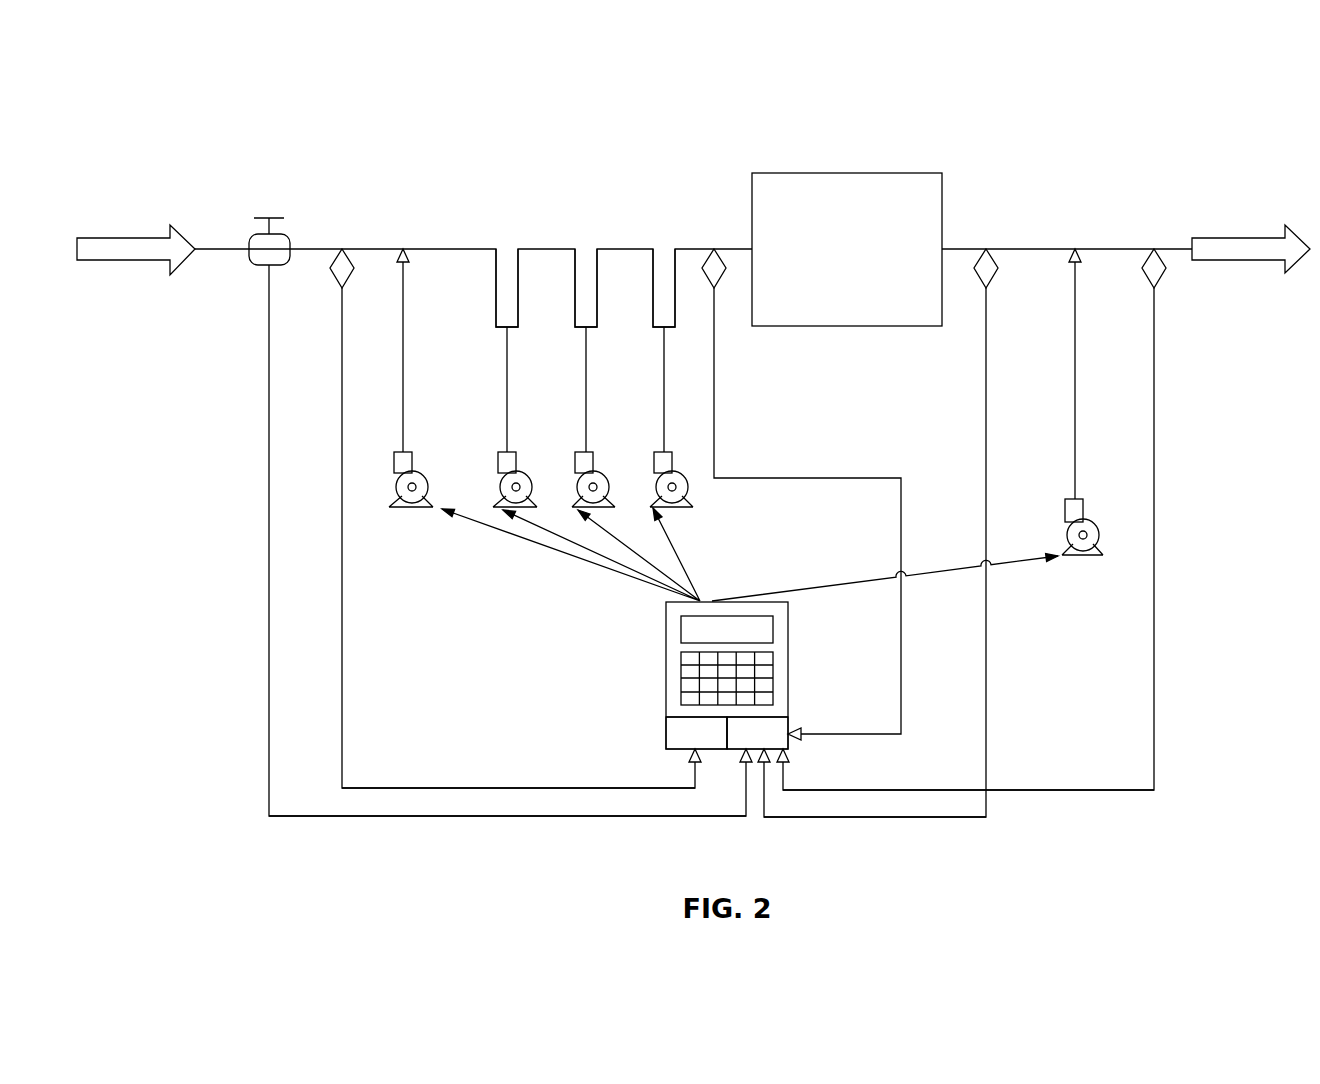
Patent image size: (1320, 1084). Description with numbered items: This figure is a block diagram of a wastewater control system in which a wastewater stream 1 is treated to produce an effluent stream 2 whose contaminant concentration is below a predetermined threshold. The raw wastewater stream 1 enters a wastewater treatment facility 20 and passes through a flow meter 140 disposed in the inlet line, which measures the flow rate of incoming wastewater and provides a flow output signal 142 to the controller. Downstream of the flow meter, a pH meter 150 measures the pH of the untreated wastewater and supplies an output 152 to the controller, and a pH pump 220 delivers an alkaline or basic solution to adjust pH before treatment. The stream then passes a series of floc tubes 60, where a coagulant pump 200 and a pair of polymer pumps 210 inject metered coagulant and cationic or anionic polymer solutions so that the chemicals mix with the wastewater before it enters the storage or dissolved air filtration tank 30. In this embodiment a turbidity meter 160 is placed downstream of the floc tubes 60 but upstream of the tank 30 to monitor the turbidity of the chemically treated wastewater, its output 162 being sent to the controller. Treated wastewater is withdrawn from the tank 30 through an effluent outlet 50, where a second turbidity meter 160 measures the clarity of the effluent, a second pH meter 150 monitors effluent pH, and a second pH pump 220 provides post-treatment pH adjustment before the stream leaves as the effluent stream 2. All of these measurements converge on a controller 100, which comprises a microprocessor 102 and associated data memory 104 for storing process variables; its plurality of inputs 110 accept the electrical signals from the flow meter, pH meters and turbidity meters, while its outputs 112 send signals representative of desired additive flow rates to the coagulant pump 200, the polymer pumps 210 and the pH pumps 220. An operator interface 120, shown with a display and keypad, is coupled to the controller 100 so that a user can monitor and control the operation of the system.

The wastewater stream 1 is at (147, 243).
The effluent stream 2 is at (1226, 243).
The wastewater treatment facility 20 is at (882, 148).
The dissolved air filtration tank 30 is at (943, 200).
The effluent outlet 50 is at (1172, 249).
The floc tubes 60 is at (520, 282).
The controller 100 is at (789, 640).
The microprocessor 102 is at (696, 733).
The data memory 104 is at (757, 733).
The inputs 110 is at (637, 788).
The outputs 112 is at (633, 579).
The operator interface 120 is at (768, 688).
The flow meter 140 is at (279, 243).
The flow output signal 142 is at (270, 320).
The pH meter 150 is at (343, 253).
The output 152 is at (341, 340).
The turbidity meter 160 is at (712, 262).
The output 162 is at (715, 352).
The coagulant pump 200 is at (524, 508).
The polymer pumps 210 is at (603, 508).
The pH pump 220 is at (396, 509).